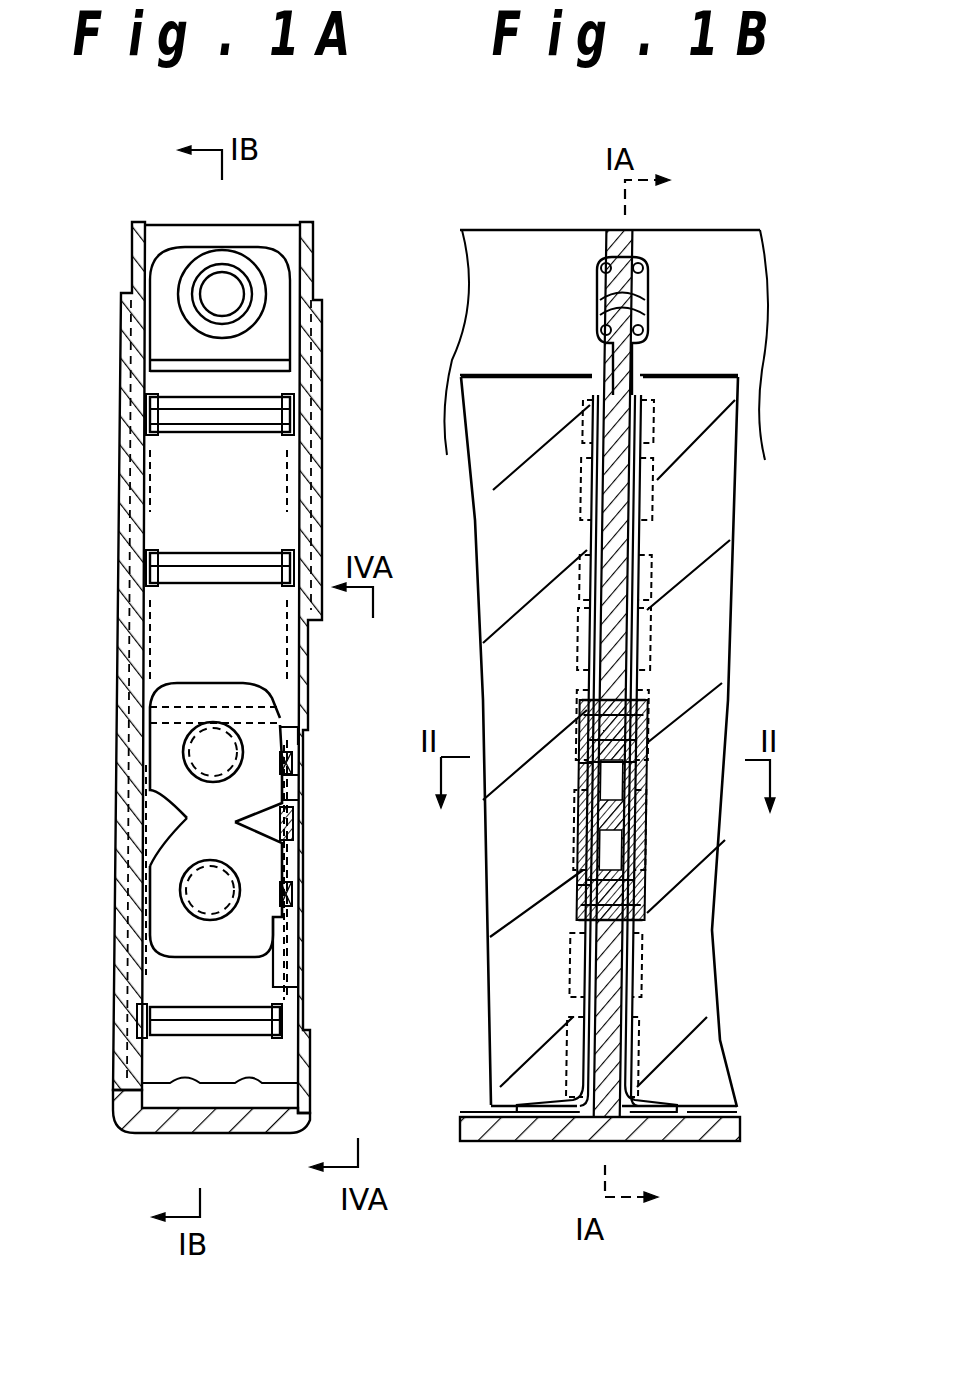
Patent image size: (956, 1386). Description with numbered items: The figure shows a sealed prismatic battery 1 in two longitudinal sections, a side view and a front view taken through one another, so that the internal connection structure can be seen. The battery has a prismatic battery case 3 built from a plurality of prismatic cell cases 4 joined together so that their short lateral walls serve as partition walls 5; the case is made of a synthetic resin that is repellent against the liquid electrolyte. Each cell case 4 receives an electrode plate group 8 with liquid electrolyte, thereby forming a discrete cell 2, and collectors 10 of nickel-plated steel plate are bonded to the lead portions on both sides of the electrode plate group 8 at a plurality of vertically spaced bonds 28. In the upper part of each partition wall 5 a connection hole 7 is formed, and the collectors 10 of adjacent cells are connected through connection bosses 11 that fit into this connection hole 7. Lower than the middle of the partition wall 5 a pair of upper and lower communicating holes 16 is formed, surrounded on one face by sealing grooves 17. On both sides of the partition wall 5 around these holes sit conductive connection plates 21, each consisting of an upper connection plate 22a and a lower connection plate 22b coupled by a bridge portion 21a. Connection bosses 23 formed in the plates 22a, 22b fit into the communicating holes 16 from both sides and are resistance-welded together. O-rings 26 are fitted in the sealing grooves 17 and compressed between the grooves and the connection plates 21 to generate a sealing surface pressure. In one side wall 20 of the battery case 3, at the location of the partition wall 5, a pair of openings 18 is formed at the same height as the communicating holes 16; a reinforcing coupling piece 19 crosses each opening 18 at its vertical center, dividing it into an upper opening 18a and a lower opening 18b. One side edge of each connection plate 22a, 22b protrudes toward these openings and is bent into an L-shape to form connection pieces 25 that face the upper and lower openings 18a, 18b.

In FIG. 1A, the sealed prismatic battery 1 is at (97, 1070).
In FIG. 1B, the sealed prismatic battery 1 is at (730, 1152).
In FIG. 1B, the discrete cell 2 is at (522, 1138).
In FIG. 1A, the prismatic battery case 3 is at (139, 1135).
In FIG. 1B, the prismatic battery case 3 is at (545, 1142).
In FIG. 1A, the prismatic cell case 4 is at (272, 228).
In FIG. 1B, the prismatic cell case 4 is at (518, 311).
In FIG. 1B, the partition wall 5 is at (653, 395).
In FIG. 1B, the connection hole 7 is at (653, 292).
In FIG. 1B, the electrode plate group 8 is at (550, 521).
In FIG. 1A, the collector 10 is at (240, 496).
In FIG. 1B, the collector 10 is at (587, 533).
In FIG. 1A, the connection boss 11 is at (232, 290).
In FIG. 1B, the connection boss 11 is at (613, 300).
In FIG. 1B, the communicating hole 16 is at (583, 763).
In FIG. 1B, the sealing groove 17 is at (646, 672).
In FIG. 1A, the opening 18 is at (300, 783).
In FIG. 1A, the upper opening 18a is at (290, 728).
In FIG. 1A, the lower opening 18b is at (295, 920).
In FIG. 1A, the coupling piece 19 is at (296, 826).
In FIG. 1A, the side wall 20 is at (303, 490).
In FIG. 1A, the conductive connection plate 21 is at (180, 686).
In FIG. 1B, the conductive connection plate 21 is at (583, 843).
In FIG. 1A, the bridge portion 21a is at (190, 823).
In FIG. 1A, the upper connection plate 22a is at (183, 787).
In FIG. 1A, the lower connection plate 22b is at (187, 853).
In FIG. 1A, the connection boss 23 is at (213, 752).
In FIG. 1B, the connection boss 23 is at (648, 762).
In FIG. 1A, the connection piece 25 is at (292, 757).
In FIG. 1B, the O-ring 26 is at (648, 713).
In FIG. 1A, the bond 28 is at (145, 508).
In FIG. 1B, the bond 28 is at (585, 427).